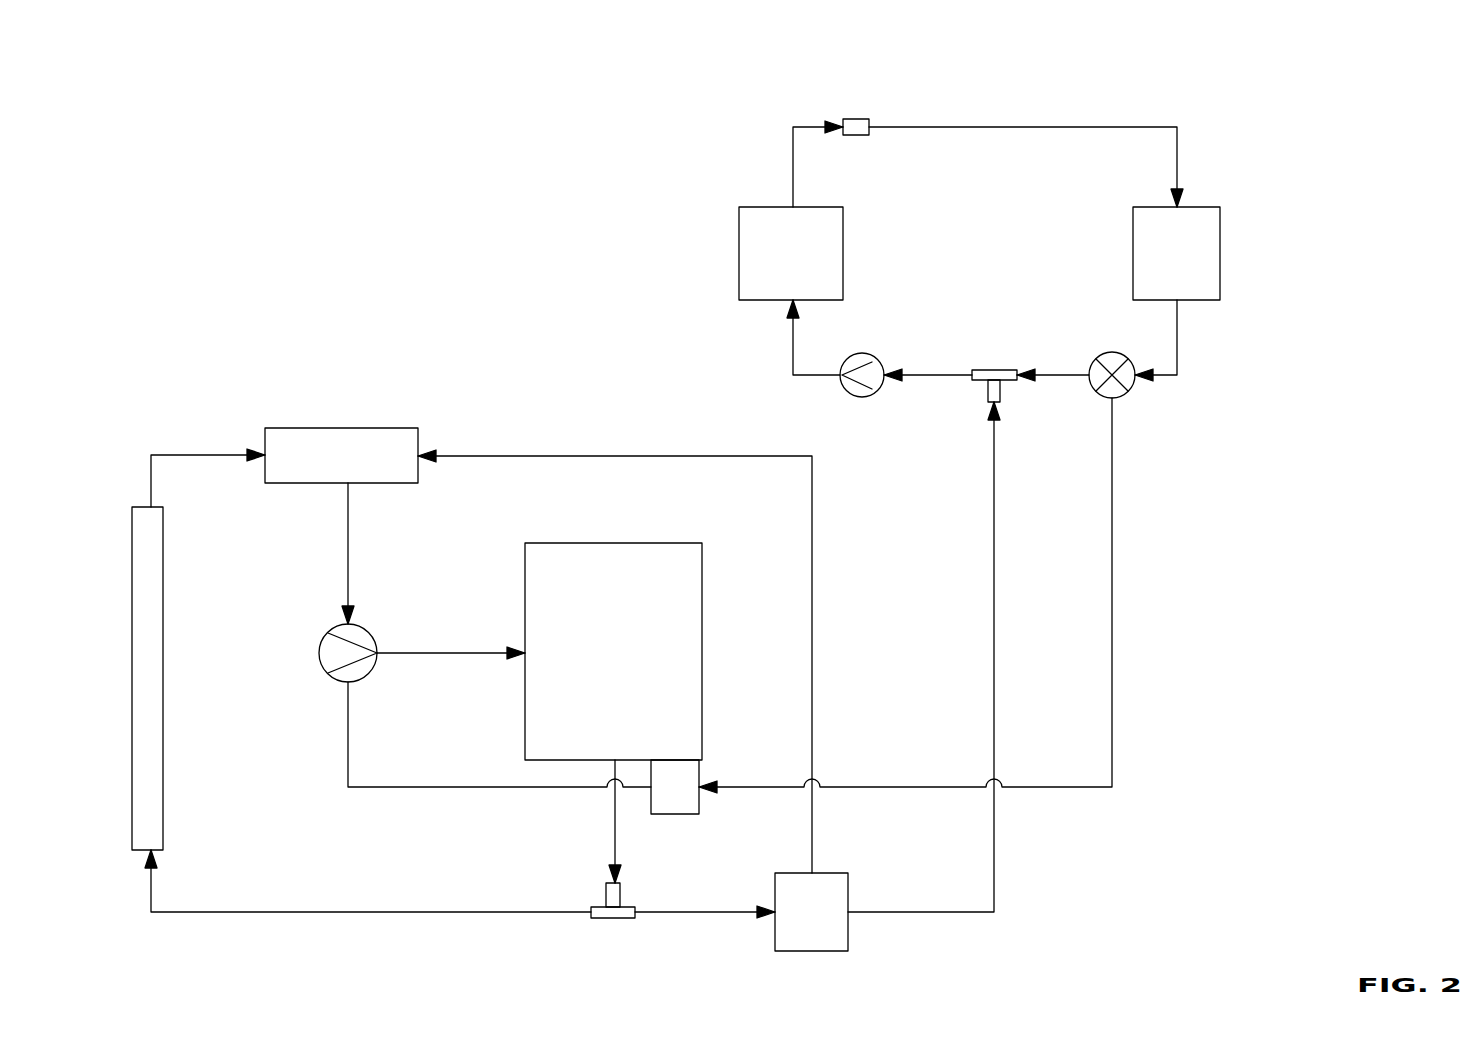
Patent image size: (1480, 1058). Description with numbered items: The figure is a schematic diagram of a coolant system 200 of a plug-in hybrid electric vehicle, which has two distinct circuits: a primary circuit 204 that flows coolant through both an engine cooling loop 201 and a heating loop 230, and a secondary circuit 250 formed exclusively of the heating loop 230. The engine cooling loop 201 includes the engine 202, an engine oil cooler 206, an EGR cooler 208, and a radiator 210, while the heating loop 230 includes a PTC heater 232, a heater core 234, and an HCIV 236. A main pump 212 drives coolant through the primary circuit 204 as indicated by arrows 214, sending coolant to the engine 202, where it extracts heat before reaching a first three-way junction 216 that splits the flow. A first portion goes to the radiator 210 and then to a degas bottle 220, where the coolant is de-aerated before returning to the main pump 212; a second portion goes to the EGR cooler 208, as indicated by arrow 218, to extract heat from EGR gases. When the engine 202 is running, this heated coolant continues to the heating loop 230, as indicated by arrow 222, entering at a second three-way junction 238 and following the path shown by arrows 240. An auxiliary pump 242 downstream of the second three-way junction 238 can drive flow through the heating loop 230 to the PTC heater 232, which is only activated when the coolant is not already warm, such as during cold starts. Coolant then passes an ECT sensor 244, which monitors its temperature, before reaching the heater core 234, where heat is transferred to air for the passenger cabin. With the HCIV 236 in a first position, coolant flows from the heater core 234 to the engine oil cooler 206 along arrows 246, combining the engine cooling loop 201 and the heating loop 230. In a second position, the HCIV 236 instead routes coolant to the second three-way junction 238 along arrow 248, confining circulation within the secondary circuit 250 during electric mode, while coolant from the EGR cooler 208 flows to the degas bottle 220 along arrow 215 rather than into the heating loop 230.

The coolant system 200 is at (228, 128).
The engine cooling loop 201 is at (222, 414).
The engine 202 is at (613, 651).
The primary circuit 204 is at (498, 286).
The engine oil cooler 206 is at (675, 787).
The EGR cooler 208 is at (811, 912).
The radiator 210 is at (131, 661).
The main pump 212 is at (316, 648).
The arrows 214 is at (160, 455).
The arrow 215 is at (588, 456).
The first three-way junction 216 is at (615, 918).
The arrow 218 is at (677, 910).
The degas bottle 220 is at (341, 455).
The arrow 222 is at (995, 860).
The heating loop 230 is at (748, 184).
The PTC heater 232 is at (791, 253).
The heater core 234 is at (1176, 253).
The HCIV 236 is at (1129, 392).
The second three-way junction 238 is at (983, 370).
The arrows 240 is at (963, 127).
The auxiliary pump 242 is at (862, 353).
The ECT sensor 244 is at (853, 119).
The arrows 246 is at (427, 786).
The arrow 248 is at (1053, 380).
The secondary circuit 250 is at (1278, 200).